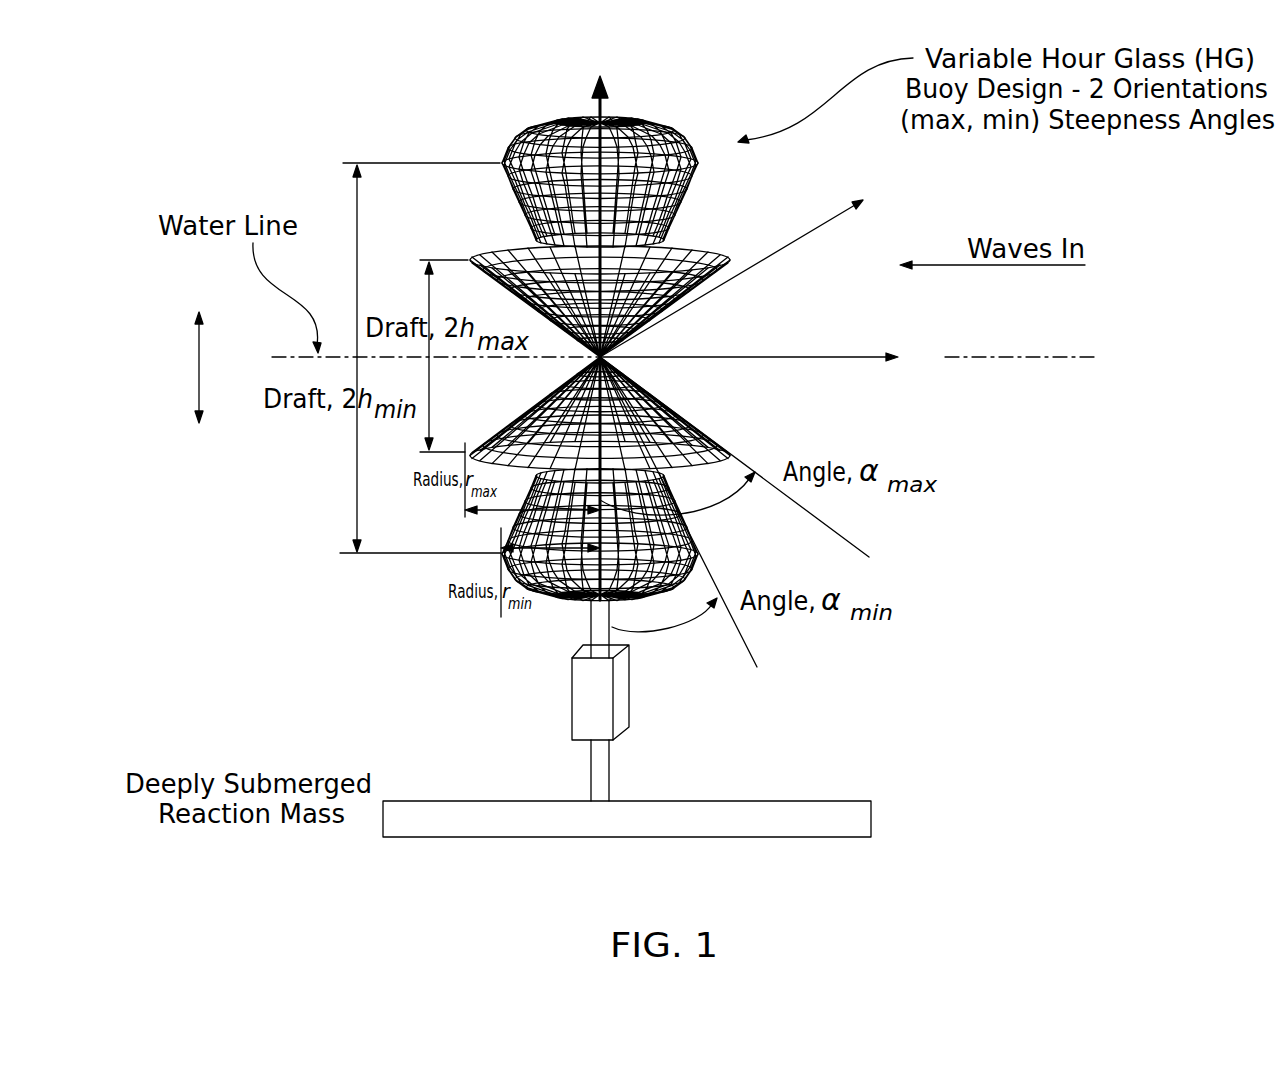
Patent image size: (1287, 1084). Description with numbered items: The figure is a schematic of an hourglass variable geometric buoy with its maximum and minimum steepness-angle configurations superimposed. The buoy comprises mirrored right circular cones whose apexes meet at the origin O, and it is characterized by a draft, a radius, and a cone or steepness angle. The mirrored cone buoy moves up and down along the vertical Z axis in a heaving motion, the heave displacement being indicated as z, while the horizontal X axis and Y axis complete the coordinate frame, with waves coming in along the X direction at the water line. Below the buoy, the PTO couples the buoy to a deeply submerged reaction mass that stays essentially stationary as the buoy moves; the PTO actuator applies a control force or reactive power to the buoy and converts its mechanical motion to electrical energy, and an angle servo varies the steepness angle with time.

The origin of buoy coordinate system (hour glass apex) O is at (600, 359).
The vertical Z axis Z is at (615, 324).
The horizontal X axis / water line X is at (684, 357).
The horizontal Y axis Y is at (752, 257).
The heave motion displacement z is at (199, 413).
The power-take-off PTO is at (685, 700).